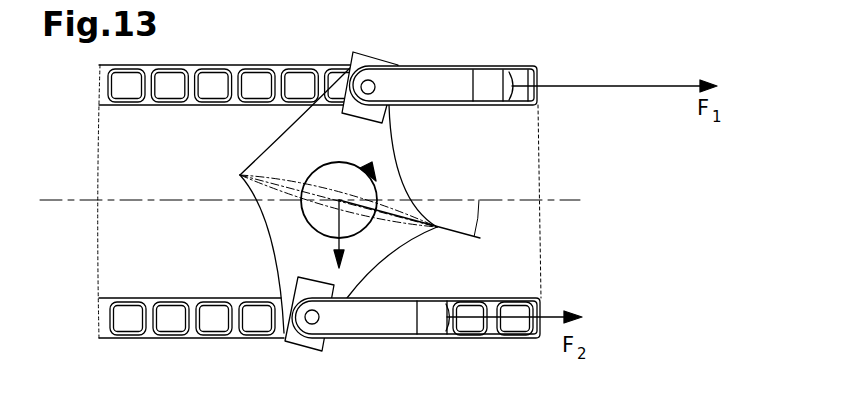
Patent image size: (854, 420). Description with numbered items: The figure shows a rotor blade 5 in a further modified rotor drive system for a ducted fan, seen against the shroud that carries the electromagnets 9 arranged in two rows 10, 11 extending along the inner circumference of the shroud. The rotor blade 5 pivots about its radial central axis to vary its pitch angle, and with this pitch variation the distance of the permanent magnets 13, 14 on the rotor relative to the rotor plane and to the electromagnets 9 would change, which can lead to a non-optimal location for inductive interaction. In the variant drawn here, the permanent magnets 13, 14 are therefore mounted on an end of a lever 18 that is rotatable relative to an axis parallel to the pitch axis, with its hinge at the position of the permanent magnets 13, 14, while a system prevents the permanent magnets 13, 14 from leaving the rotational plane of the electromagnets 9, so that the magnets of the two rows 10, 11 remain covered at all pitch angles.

The rotor blade 5 is at (281, 215).
The electromagnets 9 is at (258, 92).
The row 10 is at (522, 80).
The row 11 is at (517, 332).
The permanent magnet 13 is at (488, 77).
The permanent magnet 14 is at (430, 310).
The lever 18 is at (434, 75).